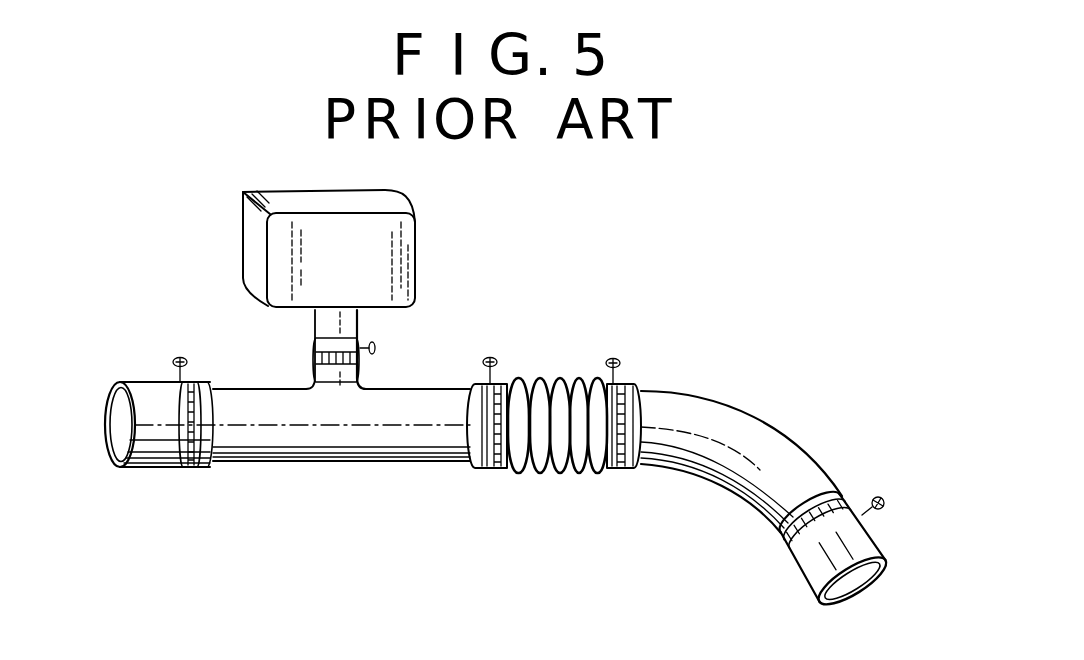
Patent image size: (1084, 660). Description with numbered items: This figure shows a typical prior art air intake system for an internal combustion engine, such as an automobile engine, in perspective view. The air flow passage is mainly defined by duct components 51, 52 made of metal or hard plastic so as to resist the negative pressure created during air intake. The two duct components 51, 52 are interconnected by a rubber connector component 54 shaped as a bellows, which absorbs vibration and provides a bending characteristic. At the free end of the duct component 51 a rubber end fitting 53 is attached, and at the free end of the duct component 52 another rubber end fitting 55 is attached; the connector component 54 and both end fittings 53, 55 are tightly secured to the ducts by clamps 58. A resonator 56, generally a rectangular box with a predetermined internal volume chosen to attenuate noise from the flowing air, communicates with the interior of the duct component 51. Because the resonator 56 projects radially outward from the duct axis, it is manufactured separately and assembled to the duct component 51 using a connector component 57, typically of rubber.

The duct component 51 is at (336, 437).
The duct component 52 is at (708, 416).
The end fitting 53 is at (156, 444).
The connector component 54 is at (567, 440).
The end fitting 55 is at (876, 542).
The resonator 56 is at (402, 250).
The connector component 57 is at (313, 371).
The clamp 58 is at (183, 398).